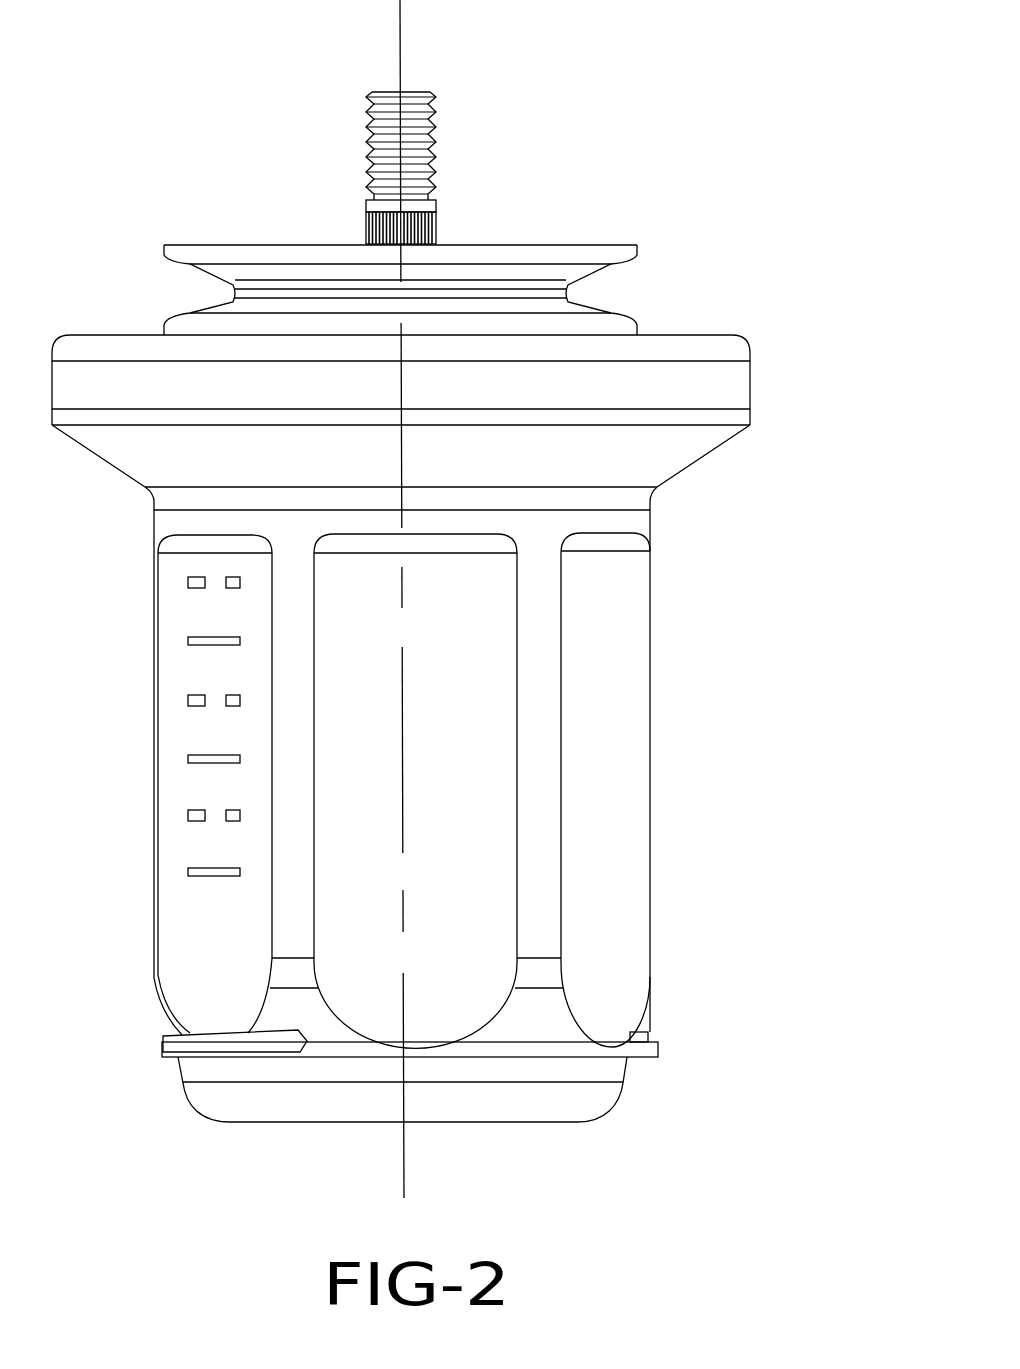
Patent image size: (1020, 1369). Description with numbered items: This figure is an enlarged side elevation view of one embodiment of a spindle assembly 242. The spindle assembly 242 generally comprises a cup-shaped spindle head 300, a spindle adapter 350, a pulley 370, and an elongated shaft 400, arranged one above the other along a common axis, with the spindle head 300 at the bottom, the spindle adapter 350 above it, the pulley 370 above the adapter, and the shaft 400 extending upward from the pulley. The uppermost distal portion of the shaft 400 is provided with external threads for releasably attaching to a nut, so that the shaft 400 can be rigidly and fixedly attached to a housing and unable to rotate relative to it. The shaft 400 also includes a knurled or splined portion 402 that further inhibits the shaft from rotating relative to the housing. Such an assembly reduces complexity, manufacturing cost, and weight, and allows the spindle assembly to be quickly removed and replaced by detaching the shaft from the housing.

The spindle assembly 242 is at (768, 308).
The spindle head 300 is at (620, 833).
The spindle adapter 350 is at (677, 347).
The pulley 370 is at (581, 255).
The shaft 400 is at (430, 110).
The knurled or splined portion 402 is at (437, 218).